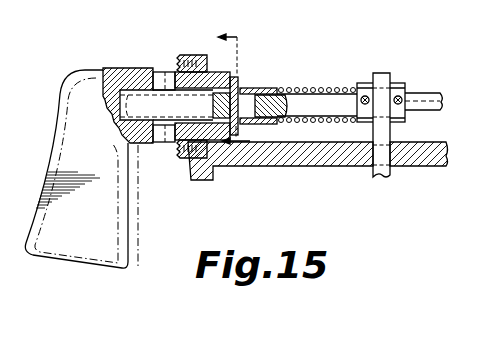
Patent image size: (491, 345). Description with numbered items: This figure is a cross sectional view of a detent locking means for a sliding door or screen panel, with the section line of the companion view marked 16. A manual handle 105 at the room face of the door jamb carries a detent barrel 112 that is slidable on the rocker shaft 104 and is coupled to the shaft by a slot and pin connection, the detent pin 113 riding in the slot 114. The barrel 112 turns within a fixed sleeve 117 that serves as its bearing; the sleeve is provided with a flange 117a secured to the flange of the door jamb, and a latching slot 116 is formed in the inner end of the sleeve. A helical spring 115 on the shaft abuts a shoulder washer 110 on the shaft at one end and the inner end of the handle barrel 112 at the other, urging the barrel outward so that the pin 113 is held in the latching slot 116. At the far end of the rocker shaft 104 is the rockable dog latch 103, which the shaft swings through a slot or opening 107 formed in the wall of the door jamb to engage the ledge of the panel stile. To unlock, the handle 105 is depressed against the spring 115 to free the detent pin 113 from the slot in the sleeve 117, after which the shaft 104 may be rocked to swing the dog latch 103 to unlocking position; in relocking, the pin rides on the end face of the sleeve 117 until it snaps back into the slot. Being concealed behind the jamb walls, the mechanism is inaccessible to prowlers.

The manual handle 105 is at (97, 70).
The detent barrel 112 is at (166, 70).
The sleeve 117 is at (213, 73).
The flange 117a is at (177, 158).
The latching slot 116 is at (238, 87).
The detent pin 113 is at (264, 84).
The slot of the slot and pin connection 114 is at (254, 100).
The helical spring 115 is at (336, 88).
The shoulder washer 110 is at (360, 82).
The dog latch 103 is at (382, 73).
The rocker shaft 104 is at (425, 98).
The slot or opening 107 is at (400, 163).
The section line 16- 16 is at (244, 89).